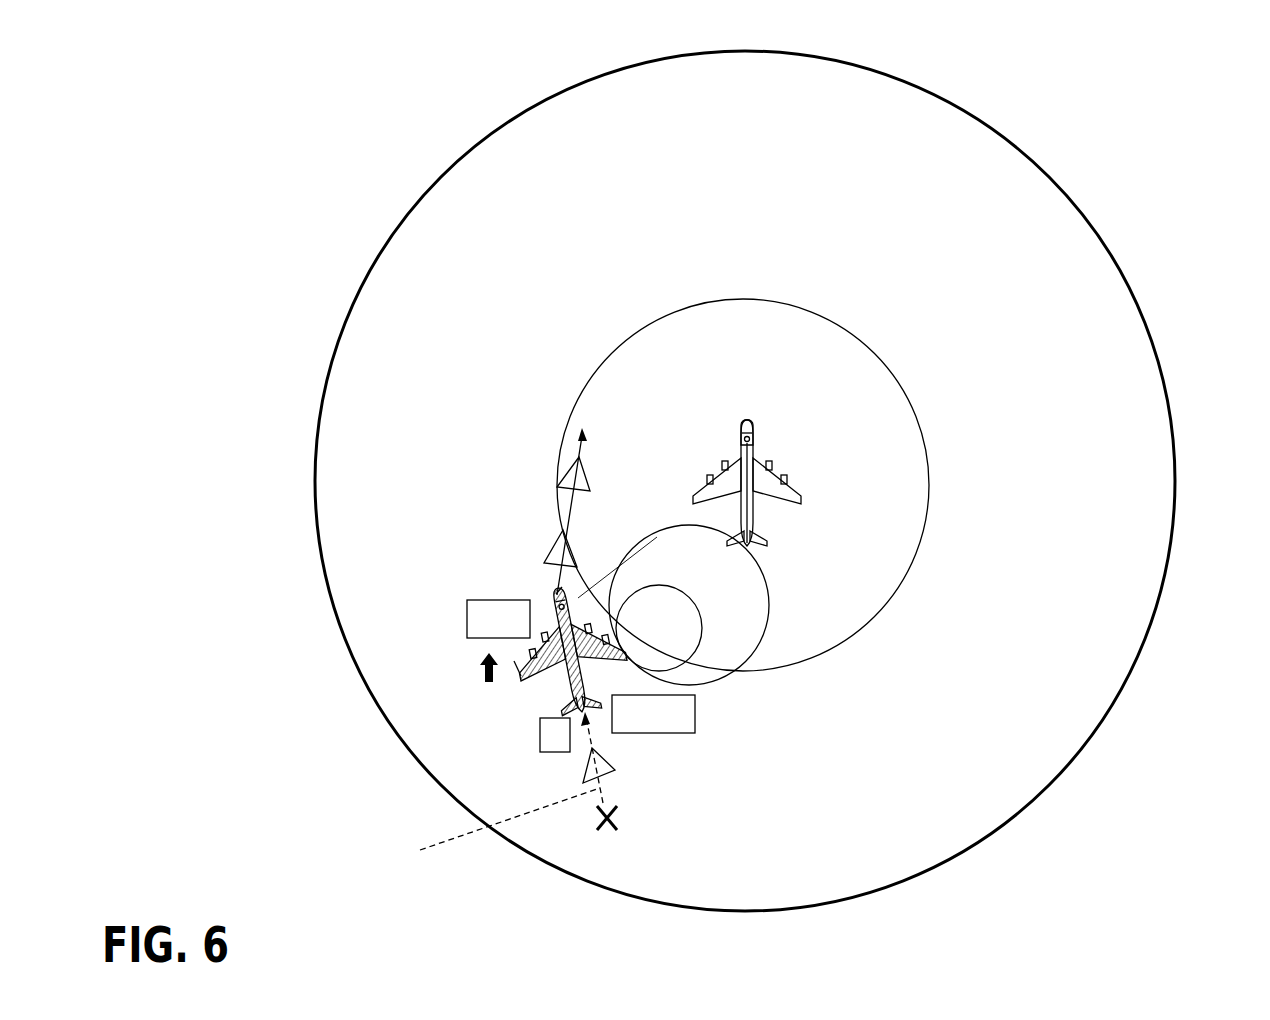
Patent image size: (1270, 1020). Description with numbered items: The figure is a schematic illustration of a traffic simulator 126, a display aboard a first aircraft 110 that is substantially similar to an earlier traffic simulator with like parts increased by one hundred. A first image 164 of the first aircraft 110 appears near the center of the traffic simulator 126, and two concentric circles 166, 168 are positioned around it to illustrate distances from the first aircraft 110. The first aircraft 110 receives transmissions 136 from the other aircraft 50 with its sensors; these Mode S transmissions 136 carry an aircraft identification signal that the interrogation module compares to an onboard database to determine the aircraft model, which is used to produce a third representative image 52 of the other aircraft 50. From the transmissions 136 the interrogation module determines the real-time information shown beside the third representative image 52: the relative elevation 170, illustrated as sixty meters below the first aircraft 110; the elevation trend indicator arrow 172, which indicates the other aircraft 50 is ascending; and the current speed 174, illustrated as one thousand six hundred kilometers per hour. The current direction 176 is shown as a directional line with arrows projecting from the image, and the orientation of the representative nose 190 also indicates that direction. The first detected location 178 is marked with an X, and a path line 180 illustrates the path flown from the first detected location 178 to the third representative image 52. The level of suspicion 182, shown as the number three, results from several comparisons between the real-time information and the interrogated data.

The other aircraft 50 is at (582, 593).
The third representative image 52 is at (537, 683).
The first aircraft 110 is at (762, 432).
The traffic simulator 126 is at (1234, 76).
The transmissions 136 is at (684, 665).
The first image 164 is at (742, 437).
The concentric circle 166 is at (931, 489).
The concentric circle 168 is at (1043, 793).
The relative elevation 170 is at (467, 612).
The elevation trend indicator arrow 172 is at (480, 668).
The current speed 174 is at (695, 717).
The current direction 176 is at (565, 515).
The first detected location 178 is at (622, 816).
The path line 180 is at (485, 813).
The level of suspicion 182 is at (540, 736).
The nose 190 is at (556, 597).